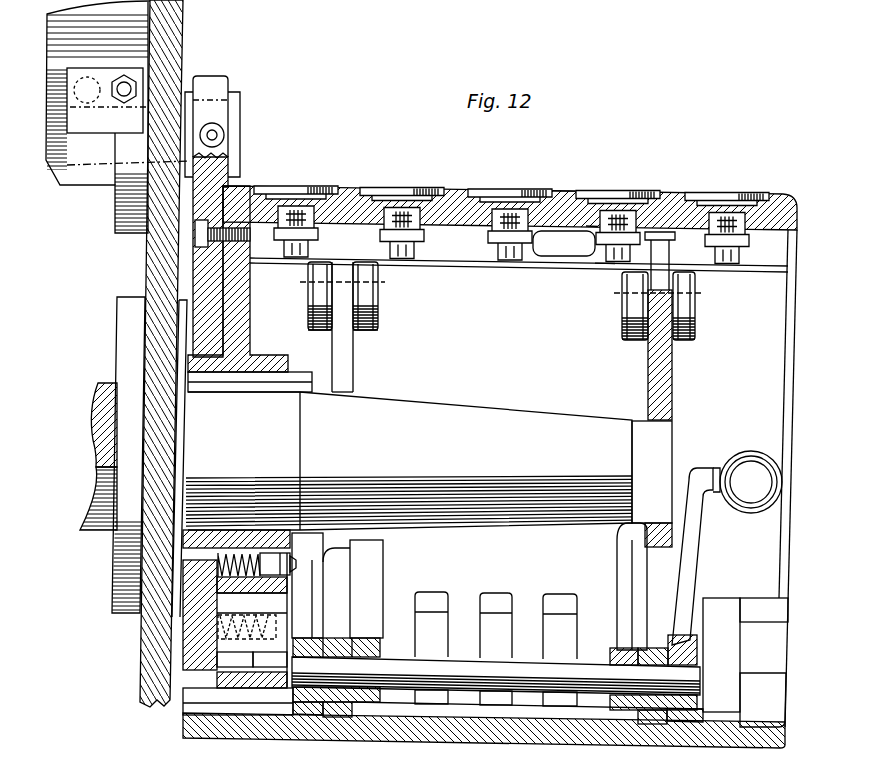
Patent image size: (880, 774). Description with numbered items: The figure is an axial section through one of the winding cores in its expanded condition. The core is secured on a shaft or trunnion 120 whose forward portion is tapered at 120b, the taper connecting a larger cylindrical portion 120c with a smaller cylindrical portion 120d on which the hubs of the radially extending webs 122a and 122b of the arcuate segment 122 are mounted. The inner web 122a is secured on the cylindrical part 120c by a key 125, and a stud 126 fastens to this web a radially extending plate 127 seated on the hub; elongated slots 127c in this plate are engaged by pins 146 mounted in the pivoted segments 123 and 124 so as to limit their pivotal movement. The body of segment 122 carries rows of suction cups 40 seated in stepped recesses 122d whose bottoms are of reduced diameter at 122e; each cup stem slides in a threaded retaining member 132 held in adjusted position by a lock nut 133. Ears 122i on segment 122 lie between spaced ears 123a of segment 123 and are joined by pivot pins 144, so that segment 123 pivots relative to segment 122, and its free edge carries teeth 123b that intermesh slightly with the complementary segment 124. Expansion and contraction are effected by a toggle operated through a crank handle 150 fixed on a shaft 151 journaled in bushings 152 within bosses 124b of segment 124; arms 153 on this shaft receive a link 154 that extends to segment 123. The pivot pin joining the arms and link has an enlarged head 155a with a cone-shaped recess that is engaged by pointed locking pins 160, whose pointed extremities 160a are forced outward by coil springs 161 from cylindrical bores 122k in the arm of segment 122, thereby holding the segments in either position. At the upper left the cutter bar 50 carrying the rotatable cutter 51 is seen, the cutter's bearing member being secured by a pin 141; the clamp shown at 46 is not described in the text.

The suction cups 40 is at (303, 187).
The clamp 46 is at (240, 113).
The cutter bar 50 is at (142, 50).
The rotatable cutter 51 is at (126, 10).
The shaft or trunnion 120 is at (533, 390).
The tapered part of shaft 120b is at (456, 404).
The larger cylindrical portion of shaft 120c is at (268, 404).
The smaller cylindrical portion of shaft 120d is at (644, 421).
The segment 122 is at (453, 203).
The inner web 122a is at (248, 320).
The outer web 122b is at (673, 379).
The recesses 122d is at (573, 197).
The reduced portion of recess 122e is at (564, 243).
The inwardly extending ears 122i is at (352, 328).
The cylindrical bores 122k is at (242, 553).
The segment 123 is at (778, 581).
The spaced ears 123a is at (374, 277).
The teeth 123b is at (579, 637).
The segment 124 is at (499, 729).
The bosses 124b is at (348, 736).
The key 125 is at (292, 354).
The stud 126 is at (195, 234).
The radially extending plate 127 is at (227, 165).
The slots 127c is at (194, 680).
The retaining member 132 is at (602, 268).
The lock nut 133 is at (609, 232).
The pin 141 is at (94, 103).
The pivot pins 144 is at (309, 304).
The pins 146 is at (236, 738).
The crank handle 150 is at (746, 470).
The shaft 151 is at (693, 677).
The bushings 152 is at (331, 718).
The arms 153 is at (696, 648).
The link 154 is at (344, 383).
The enlarged head of pivot pin 155a is at (308, 593).
The locking pins 160 is at (270, 553).
The pointed extremity of locking pin 160a is at (293, 555).
The coil springs 161 is at (231, 553).